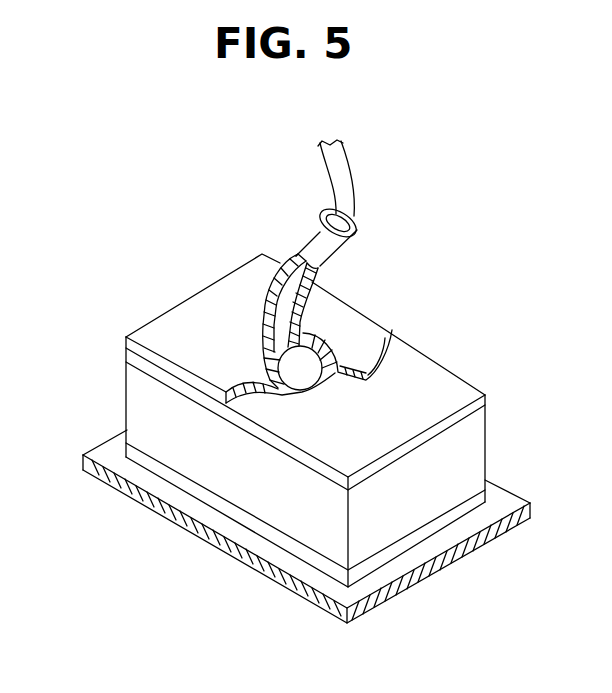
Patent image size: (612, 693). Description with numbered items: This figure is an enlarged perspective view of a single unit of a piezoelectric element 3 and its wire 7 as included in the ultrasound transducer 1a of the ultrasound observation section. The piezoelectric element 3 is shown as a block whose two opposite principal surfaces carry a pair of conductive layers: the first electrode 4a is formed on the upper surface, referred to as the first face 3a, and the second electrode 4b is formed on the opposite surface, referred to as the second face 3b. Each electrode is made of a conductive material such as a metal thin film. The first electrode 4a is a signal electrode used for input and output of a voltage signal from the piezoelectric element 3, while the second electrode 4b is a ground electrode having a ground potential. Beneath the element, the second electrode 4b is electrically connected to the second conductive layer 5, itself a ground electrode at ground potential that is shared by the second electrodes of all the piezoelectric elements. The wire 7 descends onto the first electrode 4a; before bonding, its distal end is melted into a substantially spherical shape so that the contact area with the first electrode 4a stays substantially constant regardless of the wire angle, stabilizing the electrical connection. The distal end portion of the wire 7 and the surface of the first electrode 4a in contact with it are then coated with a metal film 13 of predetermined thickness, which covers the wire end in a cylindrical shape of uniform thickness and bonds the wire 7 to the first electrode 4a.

The ultrasound transducer 1a is at (123, 256).
The piezoelectric element 3 is at (488, 446).
The first face 3a is at (447, 372).
The second face 3b is at (328, 577).
The first electrode 4a is at (490, 397).
The second electrode 4b is at (491, 494).
The second conductive layer 5 is at (408, 592).
The wire 7 is at (355, 185).
The metal film 13 is at (356, 328).